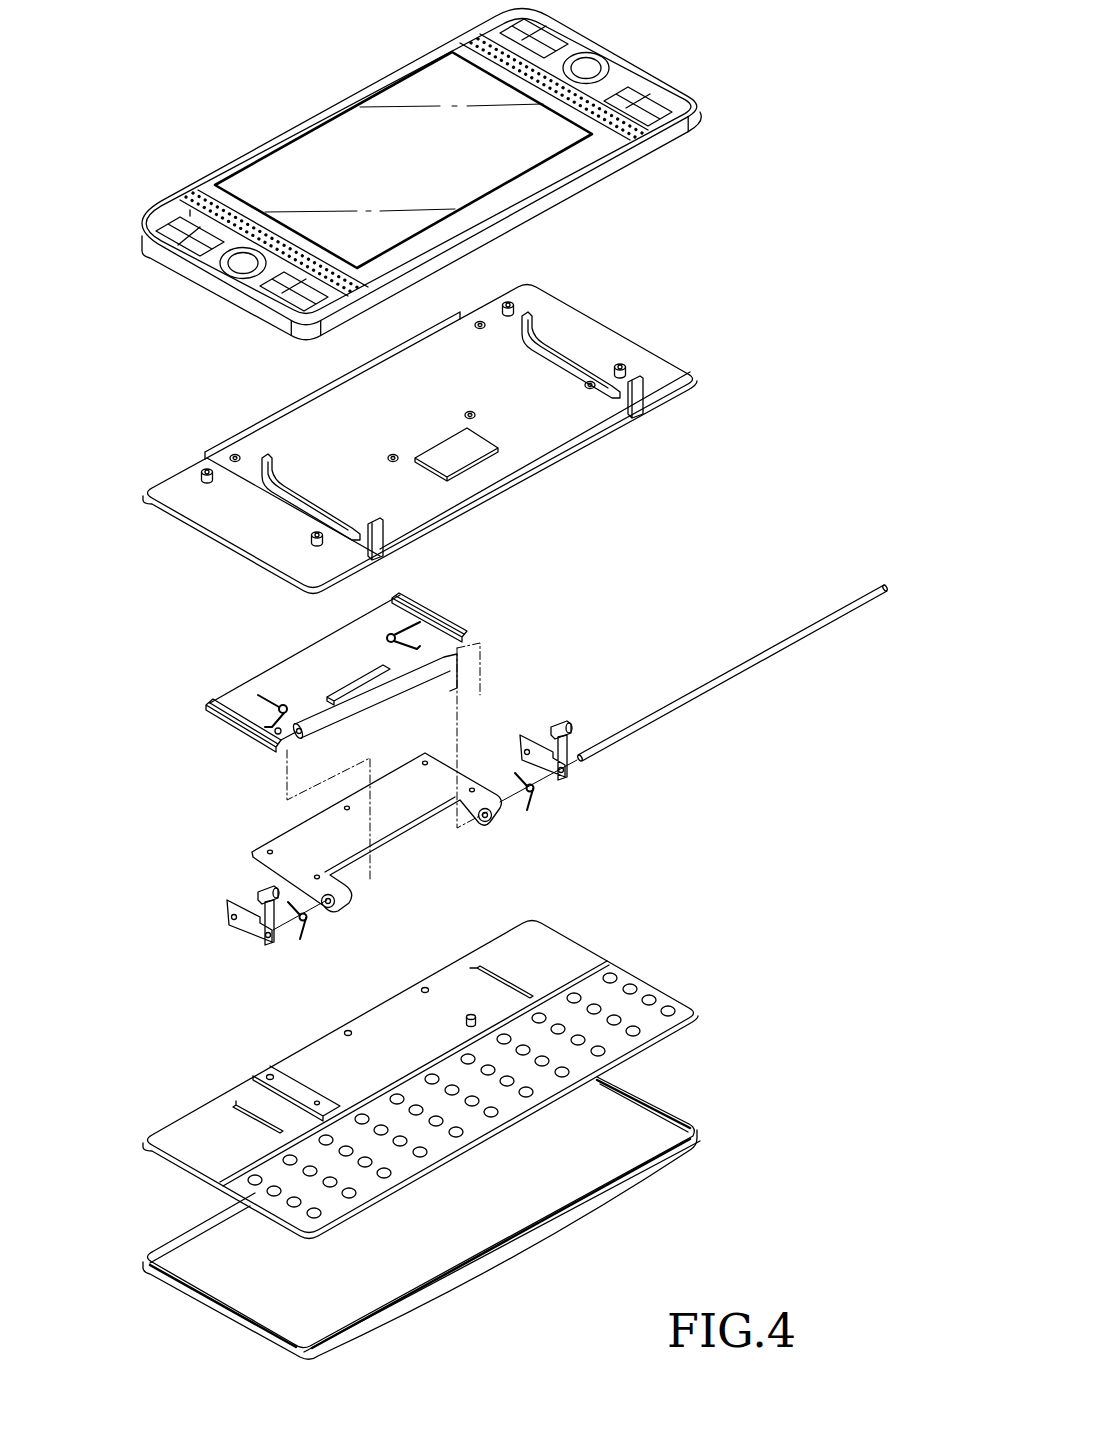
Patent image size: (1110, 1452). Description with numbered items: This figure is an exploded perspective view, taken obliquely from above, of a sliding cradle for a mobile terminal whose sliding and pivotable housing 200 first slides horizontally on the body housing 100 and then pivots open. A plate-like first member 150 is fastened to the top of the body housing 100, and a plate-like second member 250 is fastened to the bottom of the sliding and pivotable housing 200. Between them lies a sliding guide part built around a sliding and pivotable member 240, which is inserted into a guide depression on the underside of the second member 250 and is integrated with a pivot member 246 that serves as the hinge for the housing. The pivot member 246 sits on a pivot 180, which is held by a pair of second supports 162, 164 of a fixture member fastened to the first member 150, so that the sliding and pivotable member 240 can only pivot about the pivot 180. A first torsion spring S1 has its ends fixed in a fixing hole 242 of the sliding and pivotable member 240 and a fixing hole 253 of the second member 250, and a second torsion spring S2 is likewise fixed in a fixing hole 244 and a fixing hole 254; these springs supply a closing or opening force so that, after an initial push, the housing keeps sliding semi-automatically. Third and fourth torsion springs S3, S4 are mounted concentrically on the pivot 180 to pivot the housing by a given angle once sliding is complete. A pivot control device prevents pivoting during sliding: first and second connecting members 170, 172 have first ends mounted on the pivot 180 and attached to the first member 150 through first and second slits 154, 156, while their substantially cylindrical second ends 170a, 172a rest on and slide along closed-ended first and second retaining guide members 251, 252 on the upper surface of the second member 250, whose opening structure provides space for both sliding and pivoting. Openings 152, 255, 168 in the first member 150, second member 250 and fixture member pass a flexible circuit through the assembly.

The body housing 100 is at (593, 1203).
The first member 150 is at (414, 1062).
The opening 152 is at (357, 1092).
The first slit 154 is at (235, 1107).
The second slit 156 is at (512, 983).
The second support 162 is at (352, 898).
The second support 164 is at (503, 803).
The opening 168 is at (402, 844).
The first connecting member 170 is at (582, 748).
The second end of first connecting member 170a is at (562, 724).
The second connecting member 172 is at (215, 914).
The second end of second connecting member 172a is at (260, 894).
The pivot 180 is at (713, 687).
The sliding and pivotable housing 200 is at (660, 124).
The sliding and pivotable member 240 is at (348, 690).
The fixing hole 242 is at (278, 746).
The fixing hole 244 is at (462, 634).
The pivot member 246 is at (447, 663).
The second member 250 is at (439, 434).
The first retaining guide member 251 is at (277, 500).
The second retaining guide member 252 is at (562, 350).
The fixing hole 253 is at (400, 462).
The fixing hole 254 is at (480, 417).
The opening 255 is at (477, 450).
The first torsion spring S1 is at (258, 696).
The second torsion spring S2 is at (410, 628).
The third torsion spring S3 is at (305, 925).
The fourth torsion spring S4 is at (535, 798).